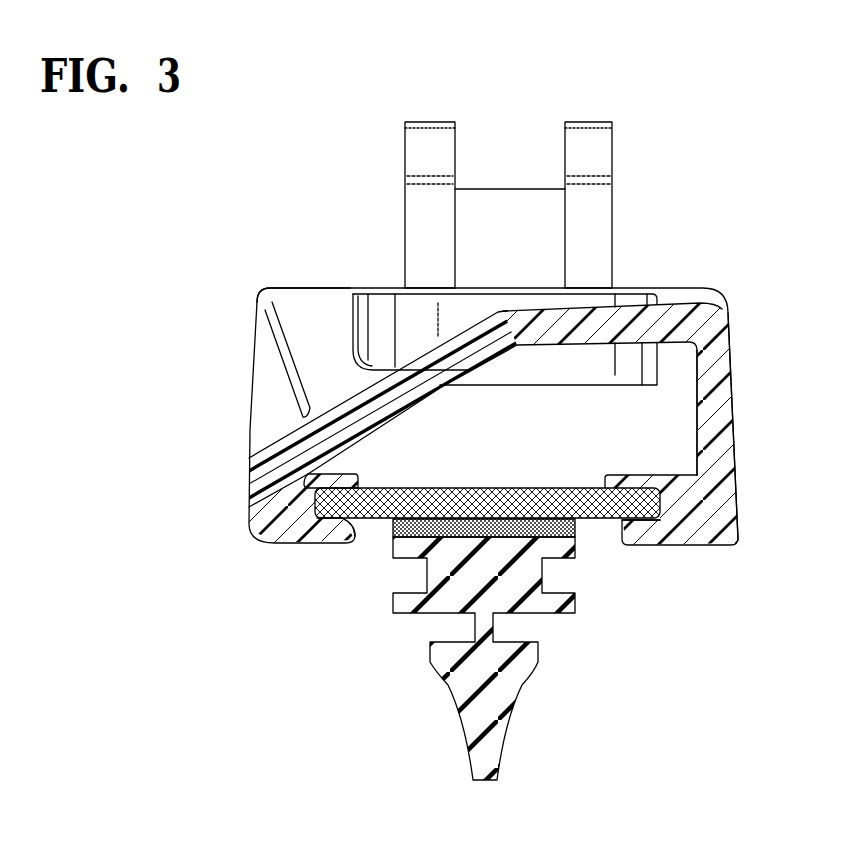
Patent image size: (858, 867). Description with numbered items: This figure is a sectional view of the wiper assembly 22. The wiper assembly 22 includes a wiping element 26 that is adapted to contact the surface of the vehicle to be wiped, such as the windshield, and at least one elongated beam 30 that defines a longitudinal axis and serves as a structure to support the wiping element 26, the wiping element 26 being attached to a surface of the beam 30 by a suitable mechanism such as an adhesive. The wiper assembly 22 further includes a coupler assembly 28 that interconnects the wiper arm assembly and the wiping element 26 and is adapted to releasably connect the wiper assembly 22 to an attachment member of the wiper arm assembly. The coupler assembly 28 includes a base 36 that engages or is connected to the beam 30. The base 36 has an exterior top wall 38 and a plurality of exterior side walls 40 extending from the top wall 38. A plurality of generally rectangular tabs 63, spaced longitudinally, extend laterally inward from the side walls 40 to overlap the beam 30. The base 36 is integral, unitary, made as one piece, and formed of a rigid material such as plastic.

The wiper assembly 22 is at (769, 139).
The wiping element 26 is at (397, 617).
The coupler assembly 28 is at (253, 305).
The elongated beam 30 is at (600, 519).
The base 36 is at (712, 297).
The exterior top wall 38 is at (623, 320).
The exterior side walls 40 is at (723, 401).
The tabs 63 is at (338, 538).